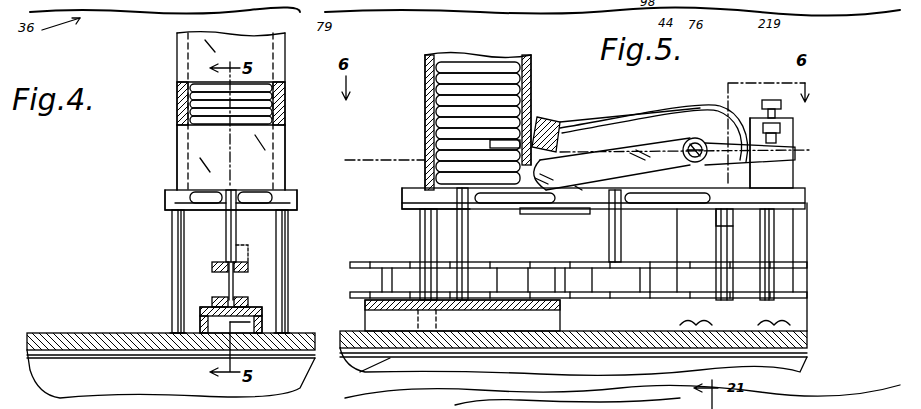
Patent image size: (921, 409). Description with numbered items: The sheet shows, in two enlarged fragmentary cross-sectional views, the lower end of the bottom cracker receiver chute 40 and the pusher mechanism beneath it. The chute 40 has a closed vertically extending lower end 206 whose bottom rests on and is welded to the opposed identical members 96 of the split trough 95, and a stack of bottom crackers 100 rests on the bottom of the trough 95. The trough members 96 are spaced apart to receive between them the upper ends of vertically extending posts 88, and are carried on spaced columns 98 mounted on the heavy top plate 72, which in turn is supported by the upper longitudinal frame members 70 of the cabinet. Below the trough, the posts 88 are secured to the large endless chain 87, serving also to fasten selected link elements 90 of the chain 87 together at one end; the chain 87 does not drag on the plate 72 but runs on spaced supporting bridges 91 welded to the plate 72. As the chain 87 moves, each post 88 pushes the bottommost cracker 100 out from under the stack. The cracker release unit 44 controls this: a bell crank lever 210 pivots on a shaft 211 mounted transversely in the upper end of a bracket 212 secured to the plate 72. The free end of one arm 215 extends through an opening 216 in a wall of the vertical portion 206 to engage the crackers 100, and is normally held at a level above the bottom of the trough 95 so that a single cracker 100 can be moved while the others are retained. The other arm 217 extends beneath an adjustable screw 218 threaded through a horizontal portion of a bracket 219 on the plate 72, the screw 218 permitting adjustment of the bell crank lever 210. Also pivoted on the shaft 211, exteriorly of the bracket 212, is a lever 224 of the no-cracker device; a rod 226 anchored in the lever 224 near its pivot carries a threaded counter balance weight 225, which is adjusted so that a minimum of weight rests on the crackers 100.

In FIG. 4, the bottom cracker receiver chute 40 is at (166, 61).
In FIG. 5, the bottom cracker receiver chute 40 is at (424, 76).
In FIG. 4, the bottom cracker 100 is at (190, 118).
In FIG. 5, the bottom cracker 100 is at (490, 92).
In FIG. 4, the lower end of trough 206 is at (195, 140).
In FIG. 5, the lower end of trough 206 is at (425, 124).
In FIG. 4, the split trough 95 is at (156, 210).
In FIG. 5, the split trough 95 is at (393, 204).
In FIG. 4, the trough member 96 is at (176, 206).
In FIG. 5, the trough member 96 is at (412, 200).
In FIG. 4, the post 88 is at (226, 238).
In FIG. 5, the post 88 is at (468, 245).
In FIG. 4, the column 98 is at (173, 281).
In FIG. 5, the column 98 is at (420, 244).
In FIG. 4, the endless chain 87 is at (212, 267).
In FIG. 5, the endless chain 87 is at (358, 266).
In FIG. 4, the link element 90 is at (212, 274).
In FIG. 5, the link element 90 is at (476, 276).
In FIG. 4, the supporting bridge 91 is at (262, 318).
In FIG. 5, the supporting bridge 91 is at (380, 318).
In FIG. 4, the top plate 72 is at (97, 333).
In FIG. 5, the top plate 72 is at (790, 348).
In FIG. 5, the upper longitudinal frame member 70 is at (360, 372).
In FIG. 5, the bracket 212 is at (680, 322).
In FIG. 5, the opening 216 is at (592, 190).
In FIG. 5, the shaft 211 is at (702, 140).
In FIG. 5, the other arm of bell crank lever 217 is at (762, 165).
In FIG. 5, the cracker release unit 44 is at (670, 102).
In FIG. 5, the counter balance weight 225 is at (546, 117).
In FIG. 5, the rod 226 is at (604, 122).
In FIG. 5, the bracket 219 is at (758, 124).
In FIG. 5, the adjustable screw 218 is at (766, 100).
In FIG. 5, the lever 224 is at (716, 218).
In FIG. 5, the bell crank lever 210 is at (611, 207).
In FIG. 5, the arm of bell crank lever 215 is at (582, 192).